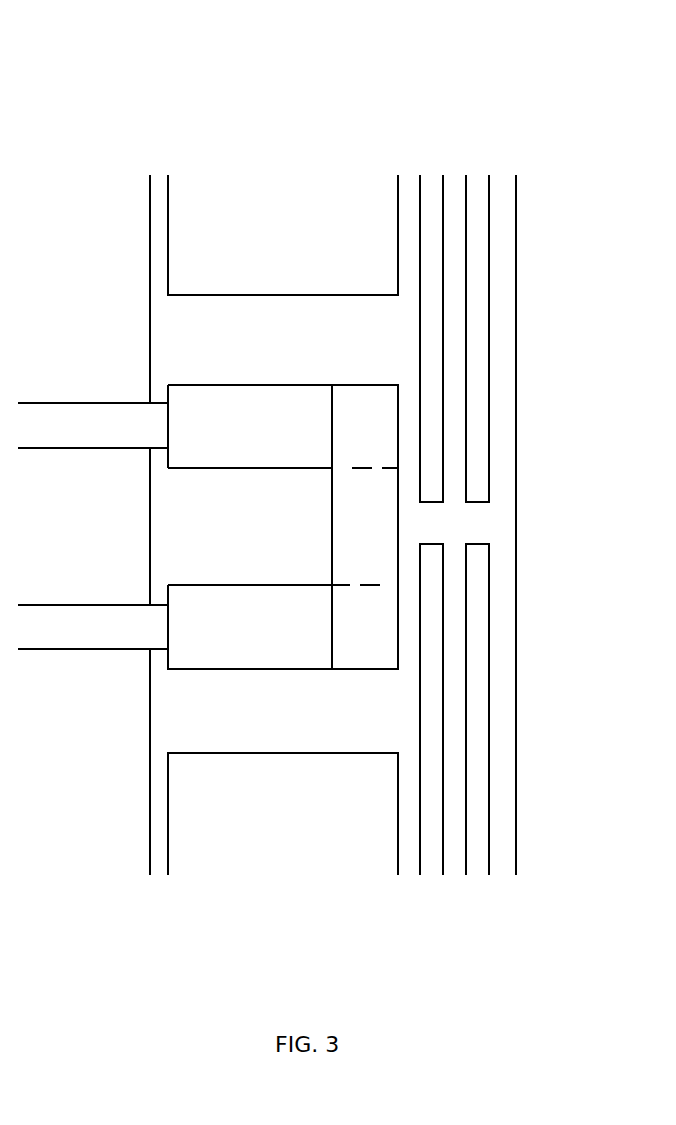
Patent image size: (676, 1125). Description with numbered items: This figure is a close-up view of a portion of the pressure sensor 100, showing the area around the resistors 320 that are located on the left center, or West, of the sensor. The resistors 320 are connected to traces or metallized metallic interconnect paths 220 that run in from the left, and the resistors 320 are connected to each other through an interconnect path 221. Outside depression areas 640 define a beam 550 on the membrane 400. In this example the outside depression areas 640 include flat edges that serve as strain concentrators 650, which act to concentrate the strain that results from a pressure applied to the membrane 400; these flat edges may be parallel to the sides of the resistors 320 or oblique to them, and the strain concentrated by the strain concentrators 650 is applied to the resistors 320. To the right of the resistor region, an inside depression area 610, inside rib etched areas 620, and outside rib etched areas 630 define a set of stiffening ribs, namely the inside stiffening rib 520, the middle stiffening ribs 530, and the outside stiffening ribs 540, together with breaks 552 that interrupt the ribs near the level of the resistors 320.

The pressure sensor 100 is at (120, 78).
The beam 550 is at (175, 340).
The strain concentrators 650 is at (250, 295).
The interconnect paths 220 is at (57, 425).
The resistors 320 is at (222, 645).
The interconnect path 221 is at (380, 534).
The breaks 552 is at (450, 527).
The membrane 400 is at (148, 823).
The outside depression areas 640 is at (337, 835).
The outside stiffening ribs 540 is at (414, 190).
The middle stiffening ribs 530 is at (456, 190).
The inside stiffening rib 520 is at (500, 190).
The outside rib etched areas 630 is at (428, 840).
The inside rib etched areas 620 is at (475, 836).
The inside depression area 610 is at (532, 833).